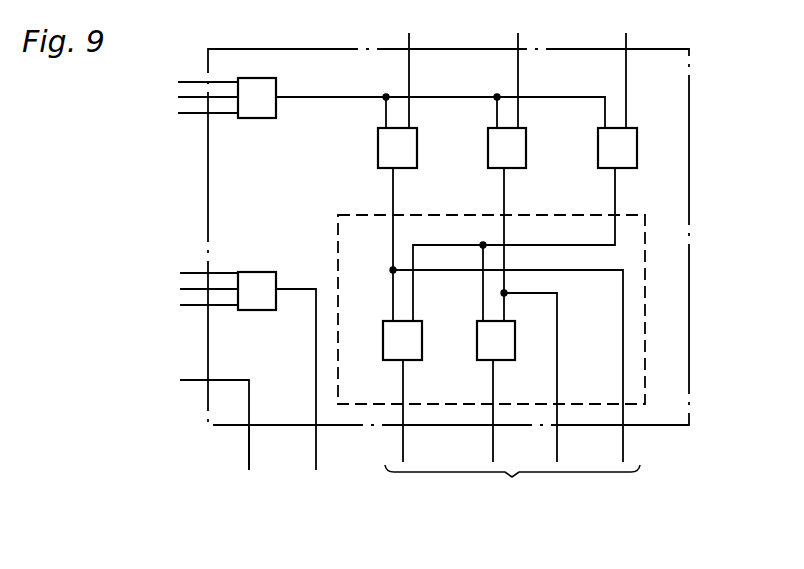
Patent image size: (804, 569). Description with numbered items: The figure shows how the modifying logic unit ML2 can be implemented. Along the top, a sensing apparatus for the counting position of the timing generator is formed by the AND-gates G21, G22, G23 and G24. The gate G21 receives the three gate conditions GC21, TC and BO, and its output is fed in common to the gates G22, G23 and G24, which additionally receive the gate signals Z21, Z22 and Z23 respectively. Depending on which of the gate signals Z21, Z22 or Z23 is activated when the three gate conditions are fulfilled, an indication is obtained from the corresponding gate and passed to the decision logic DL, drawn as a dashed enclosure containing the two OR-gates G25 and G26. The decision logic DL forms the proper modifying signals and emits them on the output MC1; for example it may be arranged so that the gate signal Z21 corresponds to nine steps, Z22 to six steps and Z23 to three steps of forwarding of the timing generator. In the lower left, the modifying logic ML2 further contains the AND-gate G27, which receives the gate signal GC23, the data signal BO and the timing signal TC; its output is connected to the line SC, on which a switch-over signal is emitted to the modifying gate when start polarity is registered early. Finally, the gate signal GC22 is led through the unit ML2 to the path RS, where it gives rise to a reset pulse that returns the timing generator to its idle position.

The AND-gate G21 is at (257, 118).
The AND-gate G22 is at (378, 146).
The AND-gate G23 is at (488, 146).
The AND-gate G24 is at (598, 146).
The OR-gate G25 is at (383, 348).
The OR-gate G26 is at (477, 348).
The AND-gate G27 is at (257, 310).
The gate signal Z21 is at (402, 69).
The gate signal Z22 is at (514, 69).
The gate signal Z23 is at (617, 69).
The modifying logic unit ML2 is at (696, 100).
The decision logic DL is at (352, 213).
The output for modifying signals MC1 is at (512, 484).
The gate signal GC21 is at (180, 81).
The gate signal GC22 is at (187, 420).
The gate signal GC23 is at (180, 272).
The element timing signal TC is at (180, 192).
The data signal BO is at (180, 208).
The reset path RS is at (244, 462).
The switch-over signal line SC is at (298, 394).